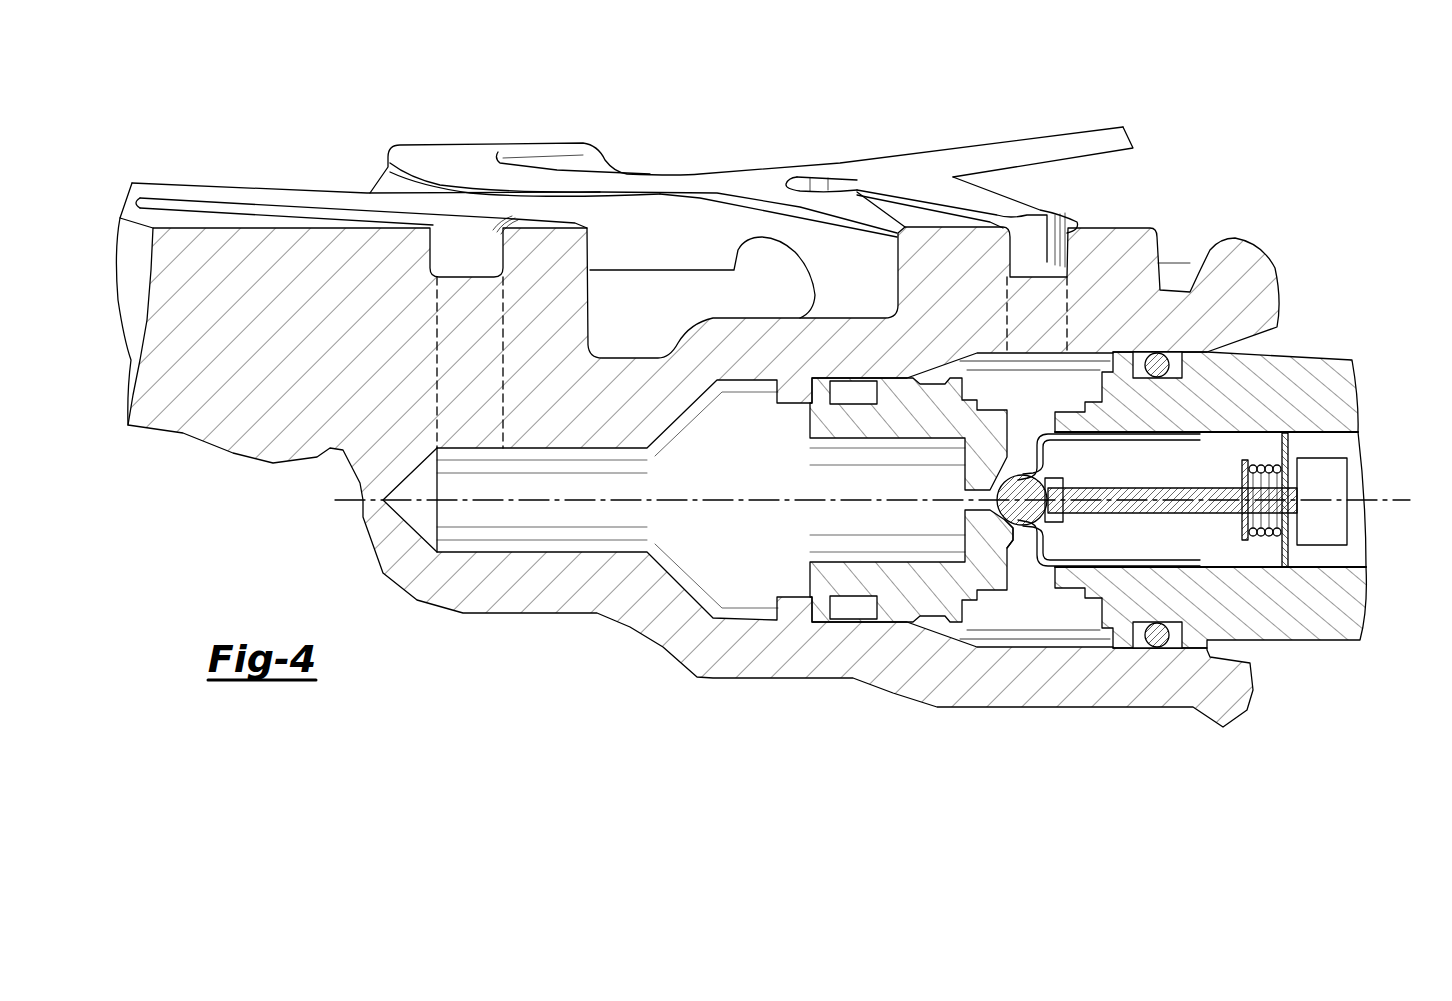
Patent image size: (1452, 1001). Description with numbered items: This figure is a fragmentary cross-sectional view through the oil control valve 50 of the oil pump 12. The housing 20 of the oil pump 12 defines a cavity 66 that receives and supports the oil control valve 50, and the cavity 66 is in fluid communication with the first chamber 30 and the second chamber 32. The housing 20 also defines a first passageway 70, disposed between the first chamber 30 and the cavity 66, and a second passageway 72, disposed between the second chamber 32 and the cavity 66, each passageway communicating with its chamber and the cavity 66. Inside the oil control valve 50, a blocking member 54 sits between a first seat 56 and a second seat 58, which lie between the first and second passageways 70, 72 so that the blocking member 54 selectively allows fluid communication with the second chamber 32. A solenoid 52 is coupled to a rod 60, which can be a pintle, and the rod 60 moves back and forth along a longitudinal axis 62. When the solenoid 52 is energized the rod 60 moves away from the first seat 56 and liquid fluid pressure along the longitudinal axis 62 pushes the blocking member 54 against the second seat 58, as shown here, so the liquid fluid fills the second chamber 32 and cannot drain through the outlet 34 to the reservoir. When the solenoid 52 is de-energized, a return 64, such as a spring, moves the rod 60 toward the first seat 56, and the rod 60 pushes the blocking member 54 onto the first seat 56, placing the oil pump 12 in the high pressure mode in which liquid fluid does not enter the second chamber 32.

The oil pump 12 is at (290, 72).
The housing 20 is at (452, 158).
The first chamber 30 is at (198, 206).
The second chamber 32 is at (853, 190).
The outlet 34 is at (1353, 538).
The oil control valve 50 is at (1310, 677).
The solenoid 52 is at (1327, 458).
The blocking member 54 is at (1036, 512).
The first seat 56 is at (1013, 537).
The second seat 58 is at (1020, 475).
The rod 60 is at (1163, 507).
The longitudinal axis 62 is at (1403, 497).
The return 64 is at (1262, 467).
The cavity 66 is at (1232, 352).
The first passageway 70 is at (437, 360).
The second passageway 72 is at (1007, 313).